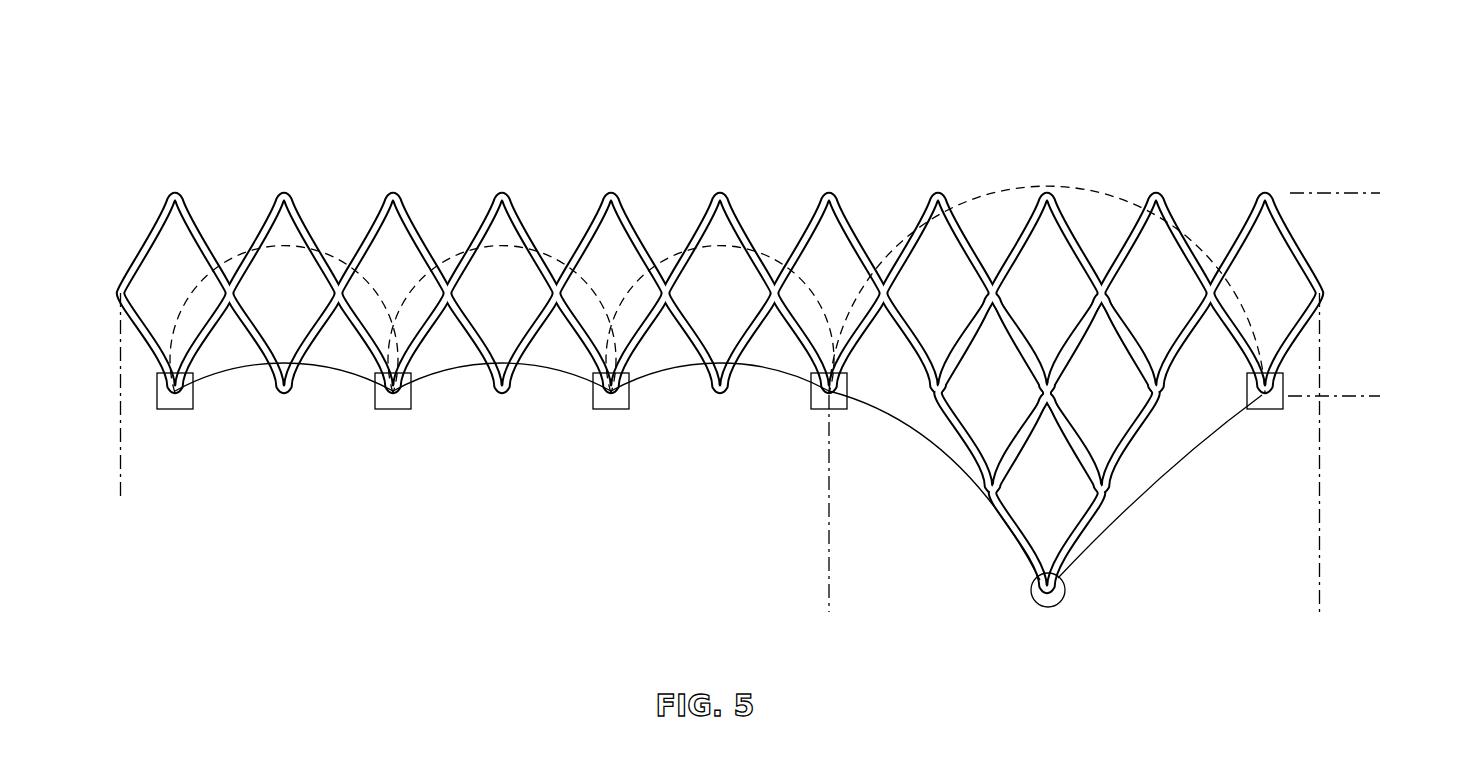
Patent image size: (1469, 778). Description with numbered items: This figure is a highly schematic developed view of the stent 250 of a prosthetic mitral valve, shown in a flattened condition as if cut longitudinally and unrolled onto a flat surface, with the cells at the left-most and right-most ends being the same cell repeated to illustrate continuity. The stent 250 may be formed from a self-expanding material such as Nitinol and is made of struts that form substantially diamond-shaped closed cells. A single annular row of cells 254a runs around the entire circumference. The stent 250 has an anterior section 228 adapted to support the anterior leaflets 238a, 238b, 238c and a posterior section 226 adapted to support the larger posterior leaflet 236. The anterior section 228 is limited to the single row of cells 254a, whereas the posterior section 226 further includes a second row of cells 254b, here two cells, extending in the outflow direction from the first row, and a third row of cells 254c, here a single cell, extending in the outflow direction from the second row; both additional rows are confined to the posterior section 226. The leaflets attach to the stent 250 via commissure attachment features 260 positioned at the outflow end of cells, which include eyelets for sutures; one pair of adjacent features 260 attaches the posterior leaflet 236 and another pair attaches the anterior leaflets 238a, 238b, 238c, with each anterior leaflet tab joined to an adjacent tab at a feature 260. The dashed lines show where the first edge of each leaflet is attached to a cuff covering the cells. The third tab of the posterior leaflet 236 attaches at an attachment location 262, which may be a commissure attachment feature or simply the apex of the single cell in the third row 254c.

The stent 250 is at (198, 42).
The posterior section 226 is at (829, 603).
The anterior section 228 is at (120, 500).
The posterior leaflet 236 is at (1008, 197).
The anterior leaflet 238a is at (240, 257).
The anterior leaflet 238b is at (458, 257).
The anterior leaflet 238c is at (678, 257).
The first row of cells 254a is at (1376, 193).
The second row of cells 254b is at (1147, 449).
The third row of cells 254c is at (1113, 530).
The commissure attachment feature 260 is at (172, 409).
The attachment location 262 is at (1032, 584).